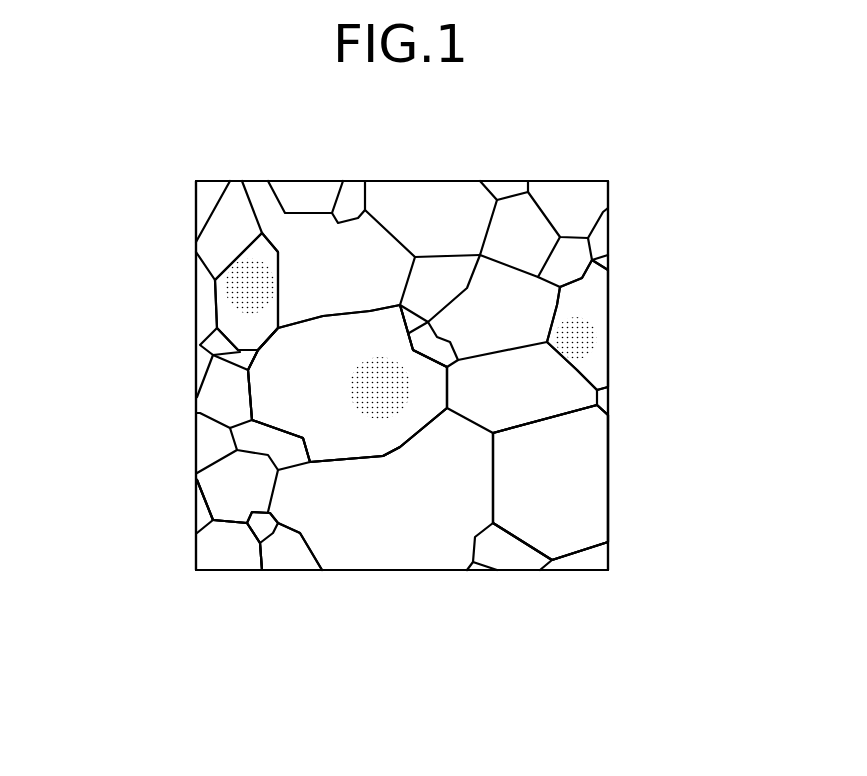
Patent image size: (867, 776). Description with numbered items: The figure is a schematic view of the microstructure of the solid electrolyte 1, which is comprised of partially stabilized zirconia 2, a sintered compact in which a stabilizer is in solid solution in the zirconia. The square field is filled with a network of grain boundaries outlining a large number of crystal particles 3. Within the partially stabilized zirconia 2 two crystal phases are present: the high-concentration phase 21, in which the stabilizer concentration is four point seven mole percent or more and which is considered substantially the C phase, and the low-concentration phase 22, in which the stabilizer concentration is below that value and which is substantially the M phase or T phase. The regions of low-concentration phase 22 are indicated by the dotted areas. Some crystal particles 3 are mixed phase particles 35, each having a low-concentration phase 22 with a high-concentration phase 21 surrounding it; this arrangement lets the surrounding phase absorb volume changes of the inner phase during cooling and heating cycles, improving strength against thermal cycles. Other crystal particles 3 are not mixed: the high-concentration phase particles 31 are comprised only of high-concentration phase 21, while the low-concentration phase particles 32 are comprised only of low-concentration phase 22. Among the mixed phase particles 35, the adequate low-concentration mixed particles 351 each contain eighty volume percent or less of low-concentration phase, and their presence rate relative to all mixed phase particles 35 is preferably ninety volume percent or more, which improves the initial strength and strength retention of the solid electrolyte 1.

The solid electrolyte 1 is at (613, 162).
The partially stabilized zirconia 2 is at (458, 326).
The crystal particles 3 is at (169, 289).
The high-concentration phase 21 is at (287, 398).
The low-concentration phase 22 is at (378, 388).
The high-concentration phase particles 31 is at (623, 482).
The low-concentration phase particles 32 is at (218, 580).
The mixed phase particles 35 is at (237, 318).
The adequate low-concentration mixed particles 351 is at (578, 298).